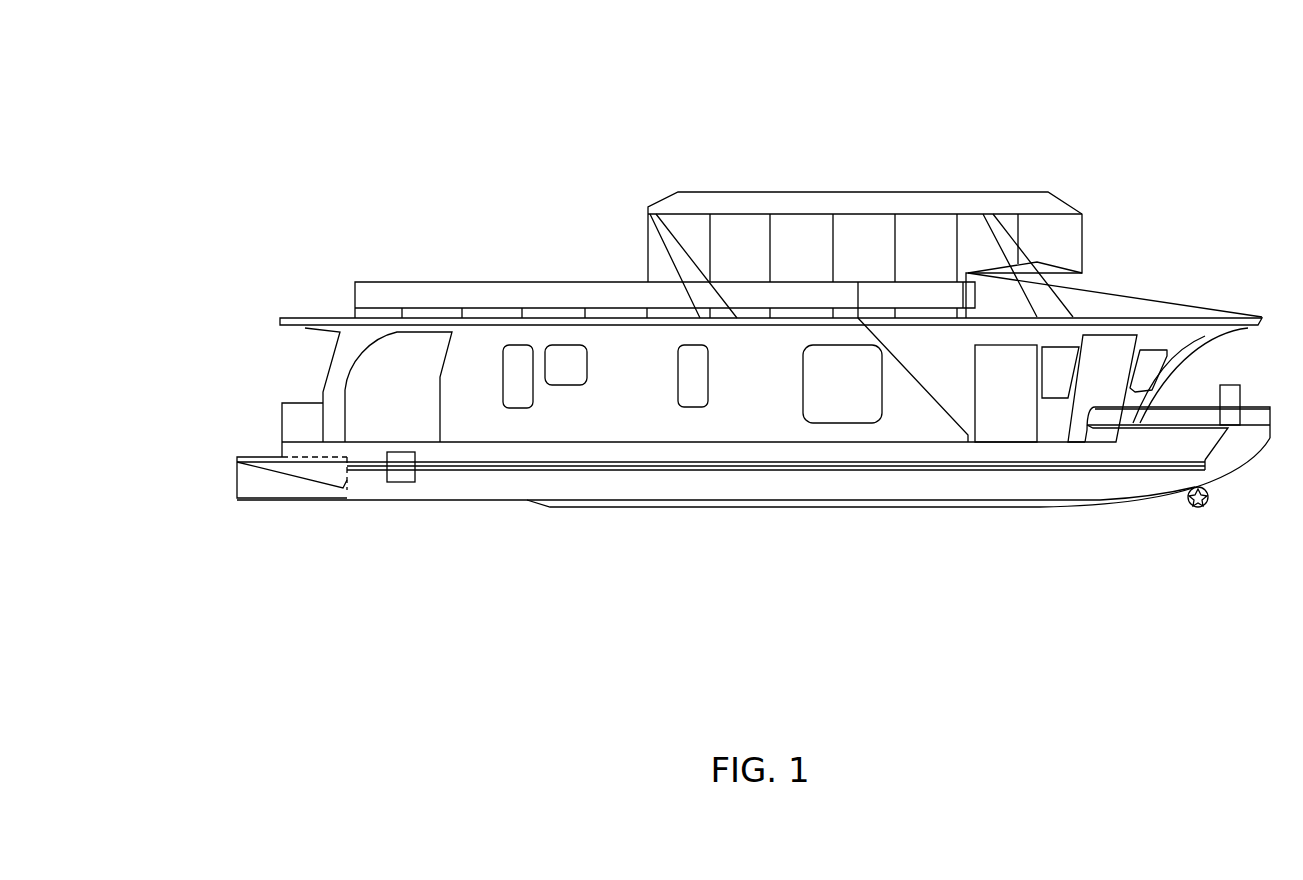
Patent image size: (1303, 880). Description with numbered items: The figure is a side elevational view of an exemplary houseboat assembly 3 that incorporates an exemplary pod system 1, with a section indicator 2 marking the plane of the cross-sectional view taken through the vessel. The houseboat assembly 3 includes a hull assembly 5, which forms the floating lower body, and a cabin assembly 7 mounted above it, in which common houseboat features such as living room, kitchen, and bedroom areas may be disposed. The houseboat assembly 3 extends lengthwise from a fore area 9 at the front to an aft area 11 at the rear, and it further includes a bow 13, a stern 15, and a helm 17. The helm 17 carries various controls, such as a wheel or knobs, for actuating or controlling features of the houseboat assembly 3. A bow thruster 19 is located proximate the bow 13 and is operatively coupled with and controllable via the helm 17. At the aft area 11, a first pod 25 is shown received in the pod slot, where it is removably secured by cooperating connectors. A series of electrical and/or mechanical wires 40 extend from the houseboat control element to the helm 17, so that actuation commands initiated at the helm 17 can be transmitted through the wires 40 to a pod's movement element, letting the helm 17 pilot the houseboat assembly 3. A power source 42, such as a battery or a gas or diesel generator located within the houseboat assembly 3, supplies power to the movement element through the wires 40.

The pod system 1 is at (400, 126).
The section line 2 is at (850, 190).
The houseboat assembly 3 is at (731, 172).
The hull assembly 5 is at (825, 485).
The cabin assembly 7 is at (482, 348).
The fore area 9 is at (1158, 278).
The aft area 11 is at (272, 310).
The bow 13 is at (1248, 443).
The stern 15 is at (290, 448).
The helm 17 is at (1233, 398).
The bow thruster 19 is at (1207, 504).
The first pod 25 is at (249, 488).
The wires 40 is at (462, 470).
The power source 42 is at (402, 475).